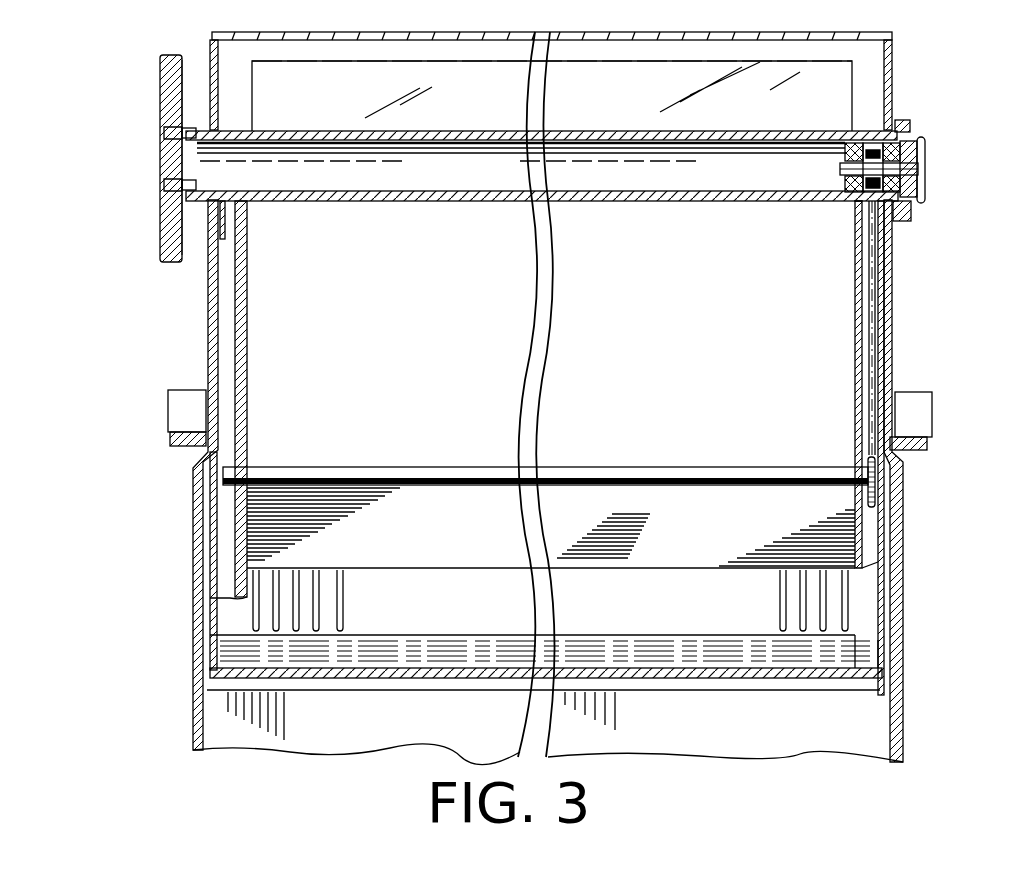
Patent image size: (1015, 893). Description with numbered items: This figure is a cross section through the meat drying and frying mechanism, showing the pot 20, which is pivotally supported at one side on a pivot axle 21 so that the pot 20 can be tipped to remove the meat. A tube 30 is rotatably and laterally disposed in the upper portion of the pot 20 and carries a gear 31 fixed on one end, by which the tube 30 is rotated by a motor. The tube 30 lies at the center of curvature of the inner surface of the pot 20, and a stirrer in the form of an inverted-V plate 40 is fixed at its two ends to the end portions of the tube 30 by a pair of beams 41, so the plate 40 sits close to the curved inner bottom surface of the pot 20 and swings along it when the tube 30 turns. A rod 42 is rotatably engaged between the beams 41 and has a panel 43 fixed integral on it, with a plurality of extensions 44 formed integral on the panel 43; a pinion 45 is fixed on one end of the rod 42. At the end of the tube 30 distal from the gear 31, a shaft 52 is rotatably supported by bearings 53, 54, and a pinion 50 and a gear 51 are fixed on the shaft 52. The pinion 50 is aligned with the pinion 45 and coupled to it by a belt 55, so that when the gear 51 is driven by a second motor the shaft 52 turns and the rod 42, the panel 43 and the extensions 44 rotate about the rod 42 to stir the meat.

The pot 20 is at (208, 293).
The pivot axle 21 is at (903, 408).
The tube 30 is at (610, 201).
The gear 31 is at (165, 105).
The plate 40 is at (222, 645).
The beams 41 is at (238, 342).
The rod 42 is at (600, 470).
The panel 43 is at (472, 492).
The extensions 44 is at (843, 603).
The pinion 45 is at (860, 458).
The pinion 50 is at (858, 204).
The gear 51 is at (922, 138).
The shaft 52 is at (840, 170).
The bearing 53 is at (850, 142).
The bearing 54 is at (900, 222).
The belt 55 is at (878, 355).